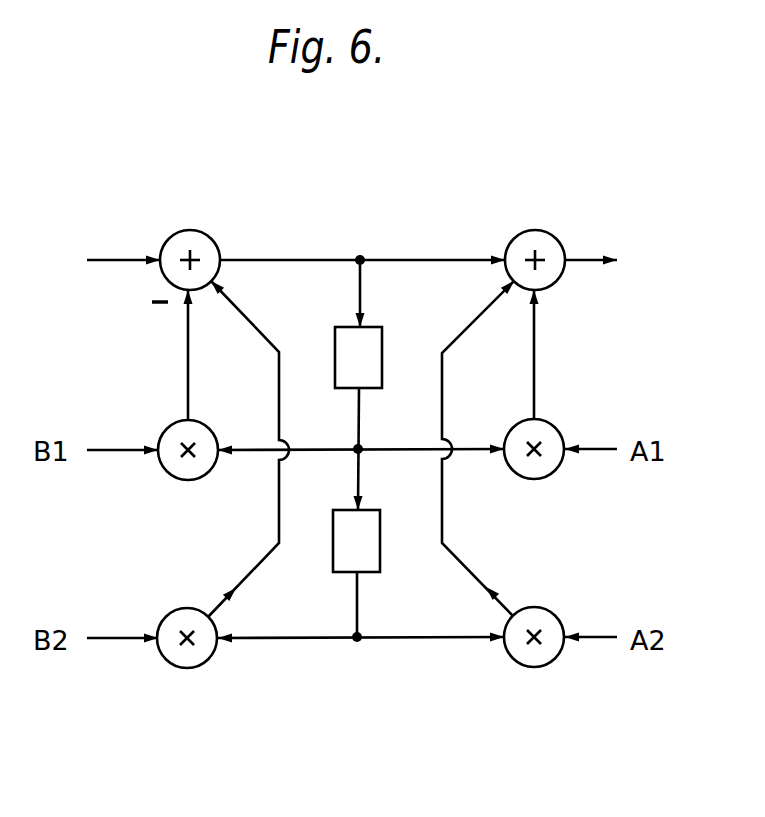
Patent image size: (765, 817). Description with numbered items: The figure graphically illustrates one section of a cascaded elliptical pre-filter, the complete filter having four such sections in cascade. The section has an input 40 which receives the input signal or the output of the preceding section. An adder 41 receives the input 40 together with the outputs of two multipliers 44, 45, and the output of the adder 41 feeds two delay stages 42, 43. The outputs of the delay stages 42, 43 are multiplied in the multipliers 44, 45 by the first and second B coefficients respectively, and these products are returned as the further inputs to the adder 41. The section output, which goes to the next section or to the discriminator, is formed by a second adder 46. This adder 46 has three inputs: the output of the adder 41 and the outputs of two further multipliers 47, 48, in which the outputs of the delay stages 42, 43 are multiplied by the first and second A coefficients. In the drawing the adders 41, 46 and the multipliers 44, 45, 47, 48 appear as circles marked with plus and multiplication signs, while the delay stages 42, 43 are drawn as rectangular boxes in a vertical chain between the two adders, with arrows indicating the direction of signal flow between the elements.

The input 40 is at (112, 260).
The adder 41 is at (203, 237).
The delay stage 42 is at (377, 338).
The delay stage 43 is at (340, 525).
The multiplier 44 is at (173, 470).
The multiplier 45 is at (193, 662).
The adder 46 is at (547, 233).
The multiplier 47 is at (548, 437).
The multiplier 48 is at (547, 617).